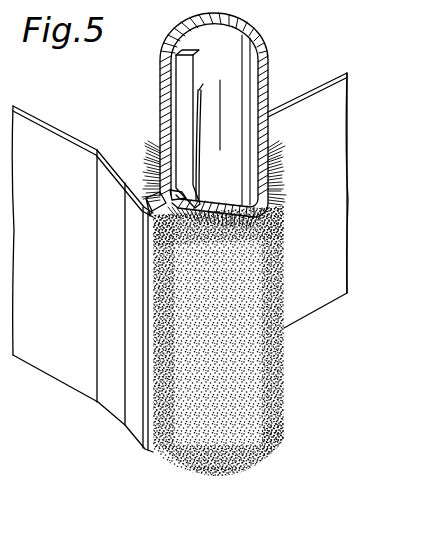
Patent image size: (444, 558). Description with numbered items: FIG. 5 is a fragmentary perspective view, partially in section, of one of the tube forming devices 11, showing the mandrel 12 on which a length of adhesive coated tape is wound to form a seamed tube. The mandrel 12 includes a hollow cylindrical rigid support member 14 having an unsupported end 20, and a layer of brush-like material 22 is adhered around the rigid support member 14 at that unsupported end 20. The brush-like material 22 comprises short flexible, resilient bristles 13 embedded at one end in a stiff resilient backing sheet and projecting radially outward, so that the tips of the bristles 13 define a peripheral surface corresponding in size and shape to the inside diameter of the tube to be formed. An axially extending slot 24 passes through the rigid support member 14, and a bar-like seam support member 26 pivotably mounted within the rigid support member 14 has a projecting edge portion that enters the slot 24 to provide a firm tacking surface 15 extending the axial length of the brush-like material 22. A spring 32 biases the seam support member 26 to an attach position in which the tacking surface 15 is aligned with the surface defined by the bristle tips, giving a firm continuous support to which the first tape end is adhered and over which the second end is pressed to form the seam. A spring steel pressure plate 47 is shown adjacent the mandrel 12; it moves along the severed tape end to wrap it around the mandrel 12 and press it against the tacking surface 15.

The device 11 is at (108, 117).
The mandrel 12 is at (290, 390).
The bristles 13 is at (254, 444).
The rigid support member 14 is at (266, 74).
The tacking surface 15 is at (145, 207).
The unsupported end 20 is at (200, 474).
The brush-like material 22 is at (278, 207).
The slot 24 is at (172, 196).
The seam support member 26 is at (180, 82).
The spring 32 is at (200, 96).
The pressure plate 47 is at (60, 306).